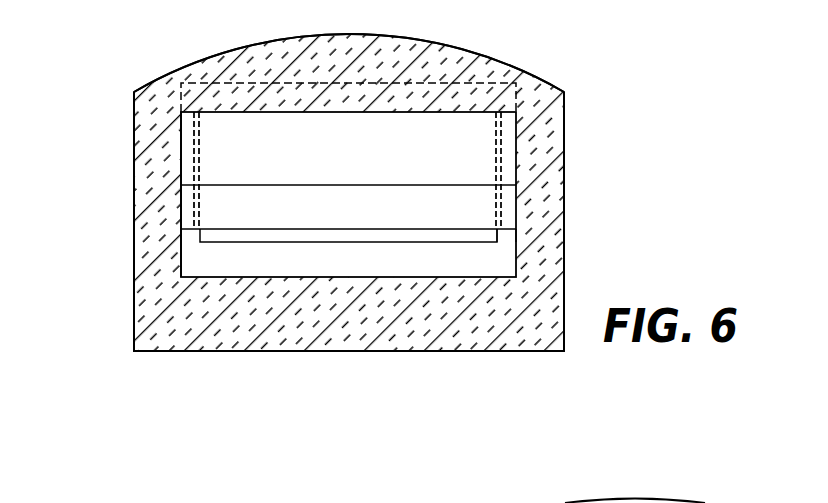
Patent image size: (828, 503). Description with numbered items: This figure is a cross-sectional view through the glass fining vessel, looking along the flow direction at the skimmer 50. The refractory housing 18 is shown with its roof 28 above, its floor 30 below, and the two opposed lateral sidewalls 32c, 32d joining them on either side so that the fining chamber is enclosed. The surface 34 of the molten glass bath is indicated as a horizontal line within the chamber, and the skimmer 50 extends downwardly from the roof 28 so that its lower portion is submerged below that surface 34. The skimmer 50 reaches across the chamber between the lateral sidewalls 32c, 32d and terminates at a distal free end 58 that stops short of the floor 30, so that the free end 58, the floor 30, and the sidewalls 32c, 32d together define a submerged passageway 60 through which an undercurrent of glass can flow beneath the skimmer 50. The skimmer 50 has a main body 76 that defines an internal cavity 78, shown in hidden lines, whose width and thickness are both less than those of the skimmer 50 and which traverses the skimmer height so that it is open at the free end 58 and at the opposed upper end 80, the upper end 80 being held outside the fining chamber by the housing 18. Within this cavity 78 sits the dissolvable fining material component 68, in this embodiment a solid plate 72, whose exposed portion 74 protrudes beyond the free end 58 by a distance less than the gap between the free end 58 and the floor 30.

The housing 18 is at (131, 97).
The roof 28 is at (360, 50).
The floor 30 is at (265, 332).
The lateral sidewall 32c is at (140, 200).
The lateral sidewall 32d is at (548, 197).
The surface of the molten glass bath 34 is at (353, 185).
The skimmer 50 is at (220, 148).
The distal free end 58 is at (506, 231).
The submerged passageway 60 is at (183, 258).
The dissolvable fining material component 68 is at (467, 243).
The solid plate 72 is at (487, 150).
The exposed portion 74 is at (238, 232).
The main body 76 is at (185, 203).
The internal cavity 78 is at (192, 160).
The opposed upper end 80 is at (432, 82).